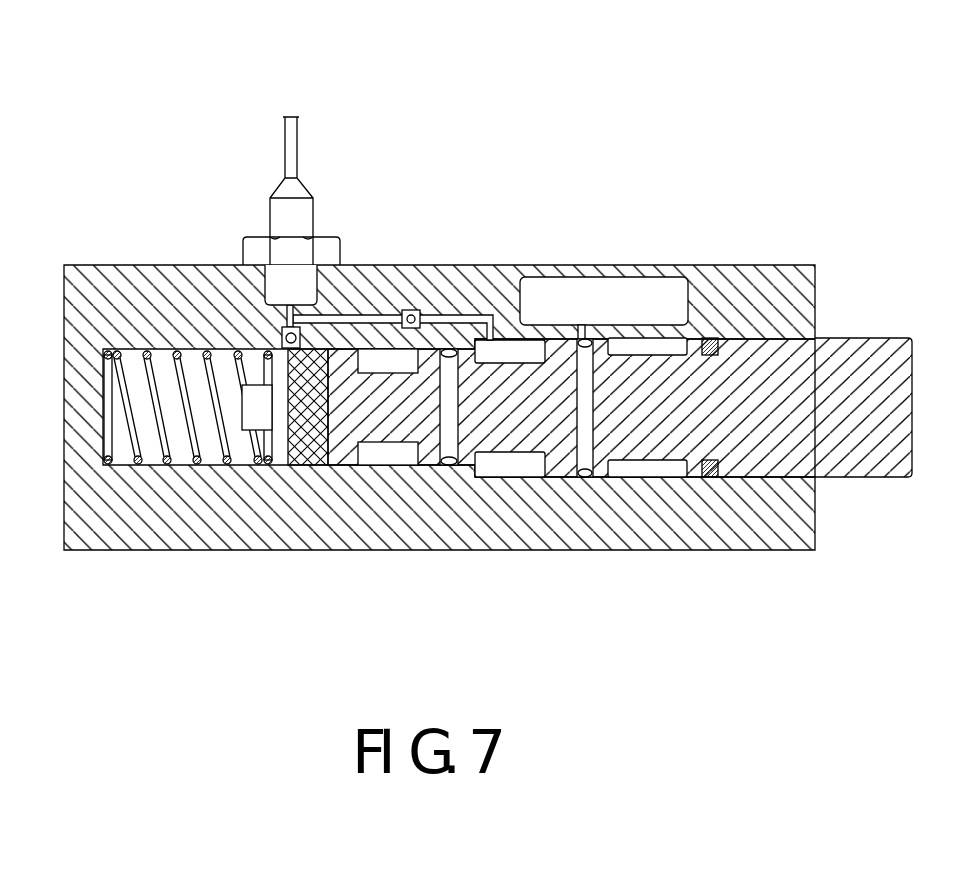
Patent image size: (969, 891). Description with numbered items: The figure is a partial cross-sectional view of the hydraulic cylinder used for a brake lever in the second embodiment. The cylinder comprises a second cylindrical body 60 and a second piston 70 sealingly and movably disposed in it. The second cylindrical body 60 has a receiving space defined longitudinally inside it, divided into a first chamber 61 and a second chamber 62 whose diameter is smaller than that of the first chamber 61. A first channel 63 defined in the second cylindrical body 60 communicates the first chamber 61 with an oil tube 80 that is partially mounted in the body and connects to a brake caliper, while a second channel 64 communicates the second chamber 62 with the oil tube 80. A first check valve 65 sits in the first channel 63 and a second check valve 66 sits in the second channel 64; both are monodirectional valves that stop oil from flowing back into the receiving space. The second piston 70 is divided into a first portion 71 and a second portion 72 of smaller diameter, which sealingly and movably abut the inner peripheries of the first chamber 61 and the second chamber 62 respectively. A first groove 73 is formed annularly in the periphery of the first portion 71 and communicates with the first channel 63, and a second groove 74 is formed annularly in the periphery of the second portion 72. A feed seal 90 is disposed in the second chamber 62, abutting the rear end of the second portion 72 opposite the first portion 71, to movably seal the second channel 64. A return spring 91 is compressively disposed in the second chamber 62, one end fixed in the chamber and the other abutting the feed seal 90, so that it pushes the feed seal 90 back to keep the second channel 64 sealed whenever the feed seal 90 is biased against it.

The second cylindrical body 60 is at (755, 277).
The first chamber 61 is at (497, 468).
The second chamber 62 is at (380, 460).
The first channel 63 is at (367, 318).
The second channel 64 is at (288, 311).
The first check valve 65 is at (412, 310).
The second check valve 66 is at (282, 338).
The second piston 70 is at (853, 340).
The first portion 71 is at (557, 342).
The second portion 72 is at (443, 349).
The first groove 73 is at (540, 454).
The second groove 74 is at (413, 445).
The oil tube 80 is at (296, 125).
The feed seal 90 is at (310, 448).
The return spring 91 is at (192, 430).